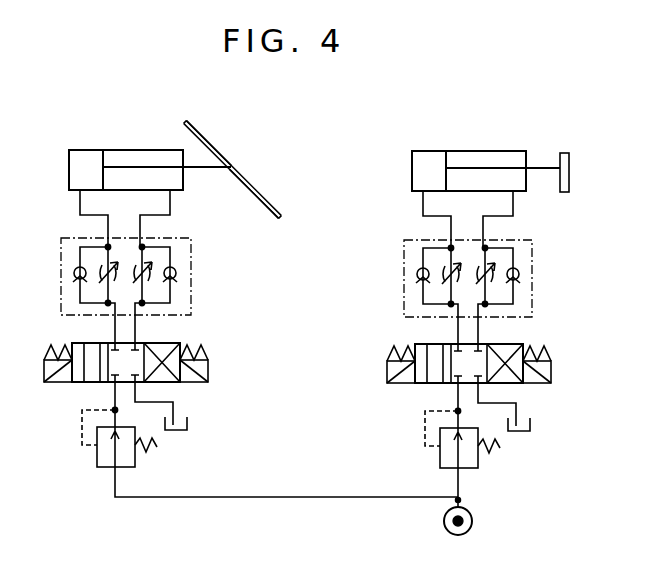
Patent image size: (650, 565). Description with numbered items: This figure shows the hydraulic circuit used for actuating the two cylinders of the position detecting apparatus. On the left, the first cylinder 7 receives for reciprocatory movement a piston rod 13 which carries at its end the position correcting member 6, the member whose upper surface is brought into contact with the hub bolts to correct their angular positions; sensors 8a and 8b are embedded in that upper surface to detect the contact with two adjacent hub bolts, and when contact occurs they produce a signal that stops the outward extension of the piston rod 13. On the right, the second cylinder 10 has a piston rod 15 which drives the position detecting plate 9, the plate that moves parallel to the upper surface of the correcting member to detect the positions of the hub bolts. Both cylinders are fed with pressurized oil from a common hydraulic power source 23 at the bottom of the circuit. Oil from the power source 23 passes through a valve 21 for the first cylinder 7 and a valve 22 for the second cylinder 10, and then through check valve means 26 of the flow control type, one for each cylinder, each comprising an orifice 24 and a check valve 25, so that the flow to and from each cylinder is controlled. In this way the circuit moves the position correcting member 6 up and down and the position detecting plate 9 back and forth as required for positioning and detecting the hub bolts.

The first cylinder 7 is at (80, 150).
The piston rod 13 is at (192, 167).
The position correcting member 6 is at (233, 178).
The sensor 8a is at (220, 143).
The sensor 8b is at (262, 216).
The second cylinder 10 is at (460, 151).
The piston rod 15 is at (540, 167).
The position detecting plate 9 is at (566, 153).
The orifice 24 is at (147, 270).
The check valve 25 is at (176, 271).
The check valve means 26 is at (192, 280).
The valve 21 is at (181, 344).
The valve 22 is at (522, 345).
The hydraulic power source 23 is at (472, 521).